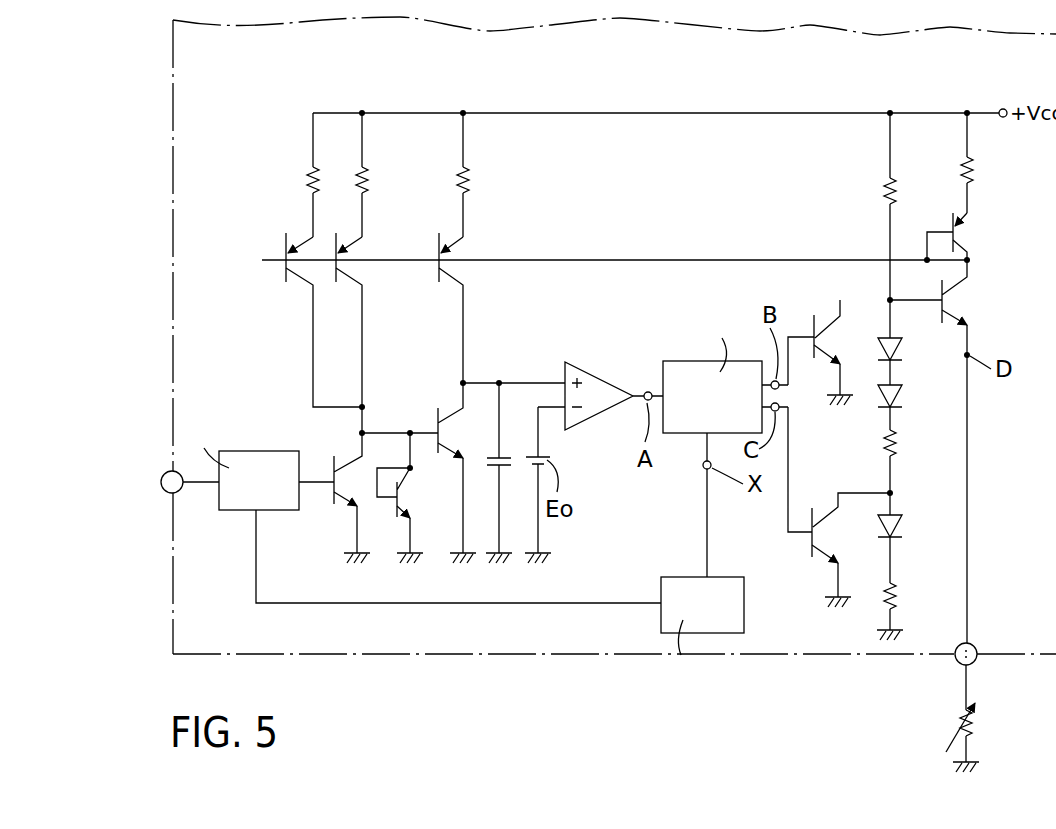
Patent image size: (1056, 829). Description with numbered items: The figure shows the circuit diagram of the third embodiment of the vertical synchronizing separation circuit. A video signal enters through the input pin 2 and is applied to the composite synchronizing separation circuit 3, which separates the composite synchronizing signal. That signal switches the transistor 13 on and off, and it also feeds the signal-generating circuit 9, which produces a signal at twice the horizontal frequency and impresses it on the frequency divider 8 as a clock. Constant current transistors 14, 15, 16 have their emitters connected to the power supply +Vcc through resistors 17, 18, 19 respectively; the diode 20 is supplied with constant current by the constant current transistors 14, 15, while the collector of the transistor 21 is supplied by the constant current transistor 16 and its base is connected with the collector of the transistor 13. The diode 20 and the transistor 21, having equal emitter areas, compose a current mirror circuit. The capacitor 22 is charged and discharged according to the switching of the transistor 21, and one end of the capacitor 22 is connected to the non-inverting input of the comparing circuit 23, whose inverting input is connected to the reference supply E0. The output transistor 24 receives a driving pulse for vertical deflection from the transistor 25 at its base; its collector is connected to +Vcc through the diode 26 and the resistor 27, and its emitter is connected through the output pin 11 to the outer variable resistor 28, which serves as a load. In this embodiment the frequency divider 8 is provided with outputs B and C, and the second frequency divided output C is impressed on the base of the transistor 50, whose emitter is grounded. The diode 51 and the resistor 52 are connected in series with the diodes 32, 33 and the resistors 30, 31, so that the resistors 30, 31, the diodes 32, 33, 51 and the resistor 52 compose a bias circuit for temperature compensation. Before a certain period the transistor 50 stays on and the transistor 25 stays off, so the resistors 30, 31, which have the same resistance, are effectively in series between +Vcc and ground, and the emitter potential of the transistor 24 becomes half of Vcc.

The input pin 2 is at (164, 491).
The composite synchronizing separation circuit 3 is at (237, 512).
The frequency divider 8 is at (688, 435).
The signal-generating circuit 9 is at (676, 577).
The output pin 11 is at (975, 648).
The transistor 13 is at (333, 492).
The constant current transistor 14 is at (282, 268).
The constant current transistor 15 is at (331, 268).
The constant current transistor 16 is at (433, 268).
The resistor 17 is at (303, 178).
The resistor 18 is at (362, 183).
The resistor 19 is at (462, 183).
The diode 20 is at (403, 487).
The transistor 21 is at (461, 414).
The capacitor 22 is at (507, 454).
The comparing circuit 23 is at (599, 418).
The output transistor 24 is at (962, 288).
The transistor 25 is at (827, 323).
The diode 26 is at (960, 237).
The resistor 27 is at (976, 167).
The outer variable resistor 28 is at (974, 727).
The resistor 30 is at (883, 197).
The resistor 31 is at (879, 449).
The diode 32 is at (900, 348).
The diode 33 is at (898, 398).
The transistor 50 is at (825, 525).
The diode 51 is at (895, 530).
The resistor 52 is at (877, 590).